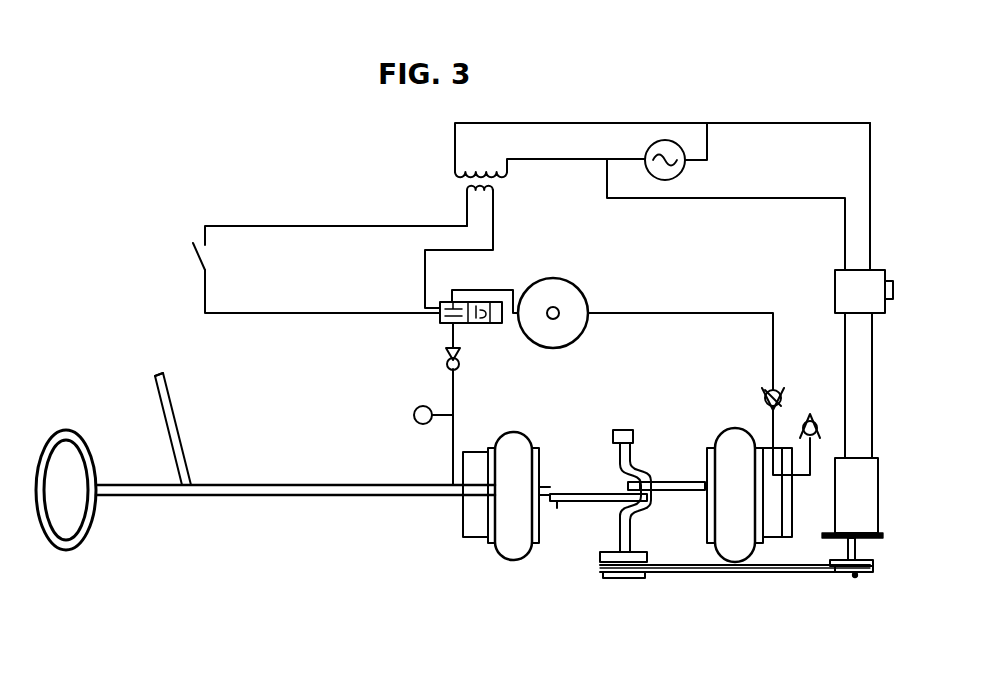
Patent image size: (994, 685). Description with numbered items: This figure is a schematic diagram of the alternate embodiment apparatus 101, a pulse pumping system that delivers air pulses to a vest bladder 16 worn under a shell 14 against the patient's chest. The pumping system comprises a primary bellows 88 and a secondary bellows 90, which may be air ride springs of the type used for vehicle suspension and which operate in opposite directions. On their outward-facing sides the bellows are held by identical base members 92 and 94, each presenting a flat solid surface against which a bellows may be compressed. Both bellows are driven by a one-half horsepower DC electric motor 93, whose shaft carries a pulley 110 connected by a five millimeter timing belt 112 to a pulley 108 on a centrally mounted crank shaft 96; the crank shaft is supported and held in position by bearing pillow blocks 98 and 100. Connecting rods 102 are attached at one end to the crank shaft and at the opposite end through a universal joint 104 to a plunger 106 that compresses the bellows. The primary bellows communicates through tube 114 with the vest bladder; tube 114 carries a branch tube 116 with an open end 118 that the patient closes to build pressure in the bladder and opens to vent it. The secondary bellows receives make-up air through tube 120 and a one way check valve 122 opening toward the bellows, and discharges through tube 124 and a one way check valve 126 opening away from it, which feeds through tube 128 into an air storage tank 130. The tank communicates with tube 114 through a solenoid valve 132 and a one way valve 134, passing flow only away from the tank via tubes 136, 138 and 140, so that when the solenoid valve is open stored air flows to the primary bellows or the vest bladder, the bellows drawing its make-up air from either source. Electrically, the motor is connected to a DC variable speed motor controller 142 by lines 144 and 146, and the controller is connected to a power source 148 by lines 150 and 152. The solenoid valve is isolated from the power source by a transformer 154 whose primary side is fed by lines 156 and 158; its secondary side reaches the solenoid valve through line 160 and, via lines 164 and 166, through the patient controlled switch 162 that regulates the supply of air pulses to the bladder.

The control system 101 is at (124, 236).
The shell 14 is at (95, 470).
The vest bladder 16 is at (58, 450).
The tube 114 is at (280, 485).
The branch tube 116 is at (178, 440).
The open end 118 is at (158, 372).
The primary bellows 88 is at (510, 562).
The secondary bellows 90 is at (745, 562).
The base member 92 is at (478, 540).
The DC electric motor 93 is at (875, 464).
The base member 94 is at (782, 522).
The crank shaft 96 is at (622, 532).
The bearing pillow block 98 is at (618, 430).
The bearing pillow block 100 is at (608, 555).
The connecting rod 102 is at (592, 492).
The universal joint 104 is at (557, 504).
The plunger 106 is at (557, 505).
The pulley 108 is at (628, 578).
The pulley 110 is at (868, 574).
The timing belt 112 is at (740, 570).
The tube 120 is at (798, 475).
The one way check valve 122 is at (816, 410).
The tube 124 is at (768, 420).
The one way check valve 126 is at (765, 394).
The tube 128 is at (638, 313).
The air storage tank 130 is at (572, 290).
The solenoid valve 132 is at (478, 323).
The one way valve 134 is at (462, 368).
The tube 136 is at (497, 300).
The tube 138 is at (446, 338).
The tube 140 is at (453, 452).
The motor controller 142 is at (835, 272).
The line 144 is at (845, 350).
The line 146 is at (866, 338).
The power source 148 is at (668, 140).
The line 150 is at (770, 123).
The line 152 is at (775, 198).
The transformer 154 is at (462, 186).
The line 156 is at (565, 123).
The line 158 is at (553, 160).
The line 160 is at (493, 238).
The switch 162 is at (193, 250).
The line 164 is at (345, 226).
The line 166 is at (298, 313).